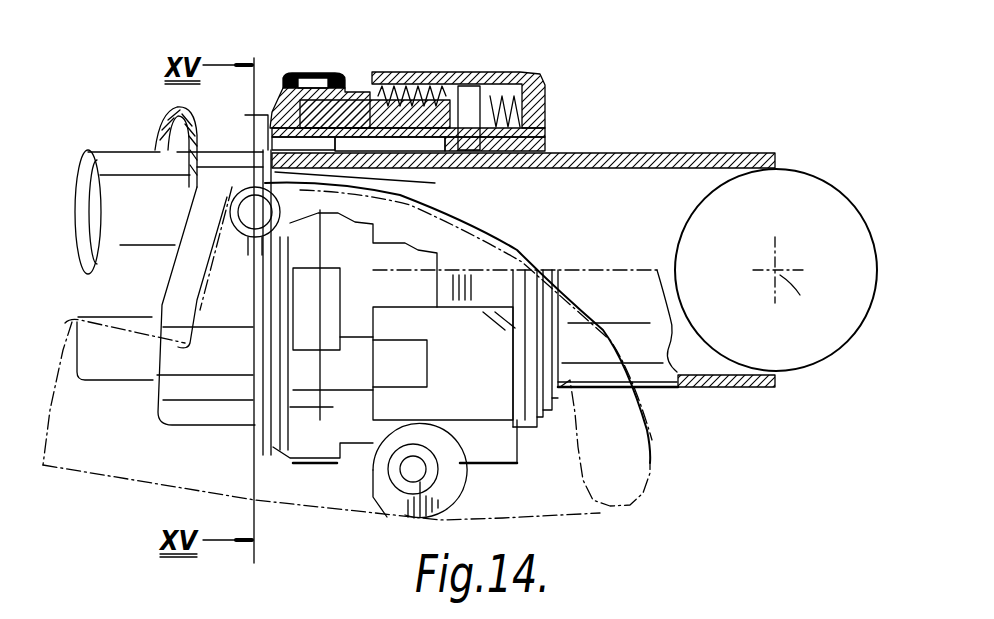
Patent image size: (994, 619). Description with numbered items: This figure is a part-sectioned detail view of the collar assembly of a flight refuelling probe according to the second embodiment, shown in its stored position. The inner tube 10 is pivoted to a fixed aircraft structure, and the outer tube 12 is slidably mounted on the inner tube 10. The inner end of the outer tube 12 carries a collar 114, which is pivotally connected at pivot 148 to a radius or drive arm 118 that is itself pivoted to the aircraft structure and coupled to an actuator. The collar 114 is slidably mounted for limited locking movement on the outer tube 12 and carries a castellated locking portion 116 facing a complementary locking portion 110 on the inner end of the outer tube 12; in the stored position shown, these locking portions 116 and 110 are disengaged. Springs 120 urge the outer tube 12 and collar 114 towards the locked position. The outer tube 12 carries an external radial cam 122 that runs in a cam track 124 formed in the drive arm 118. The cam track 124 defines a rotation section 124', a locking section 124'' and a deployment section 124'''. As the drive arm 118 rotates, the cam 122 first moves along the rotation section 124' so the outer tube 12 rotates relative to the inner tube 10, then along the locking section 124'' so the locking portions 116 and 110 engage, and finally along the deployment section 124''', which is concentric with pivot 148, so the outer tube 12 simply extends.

The inner tube 10 is at (680, 152).
The outer tube 12 is at (178, 108).
The complementary locking portion 110 is at (268, 365).
The collar 114 is at (471, 53).
The castellated locking portion 116 is at (310, 380).
The drive arm 118 is at (115, 480).
The springs 120 is at (392, 73).
The inner external radial cam 122 is at (242, 204).
The cam track 124 is at (642, 456).
The rotation section 124' is at (378, 188).
The locking section 124'' is at (458, 323).
The deployment section 124''' is at (632, 274).
The pivot 148 is at (418, 478).